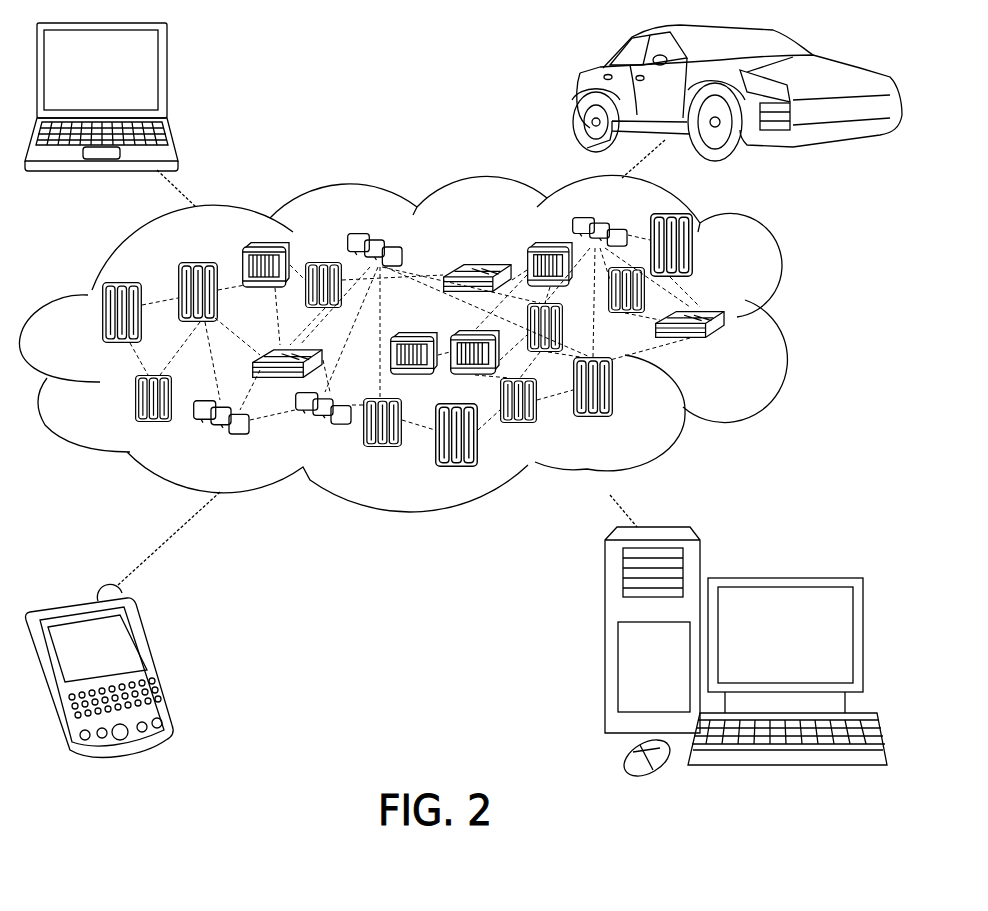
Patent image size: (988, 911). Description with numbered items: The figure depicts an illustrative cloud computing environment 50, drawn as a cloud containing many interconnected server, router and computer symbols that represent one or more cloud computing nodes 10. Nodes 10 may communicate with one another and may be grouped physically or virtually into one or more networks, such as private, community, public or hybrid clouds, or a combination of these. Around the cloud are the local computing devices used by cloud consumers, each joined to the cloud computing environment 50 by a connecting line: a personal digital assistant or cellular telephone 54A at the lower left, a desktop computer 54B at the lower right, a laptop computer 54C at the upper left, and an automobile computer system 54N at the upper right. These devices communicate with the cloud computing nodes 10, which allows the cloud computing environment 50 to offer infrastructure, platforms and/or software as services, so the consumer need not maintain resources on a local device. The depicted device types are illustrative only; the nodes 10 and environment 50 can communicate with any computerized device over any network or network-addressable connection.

The cloud computing node 10 is at (728, 348).
The cloud computing environment 50 is at (789, 323).
The personal digital assistant (PDA) or cellular telephone 54A is at (163, 669).
The desktop computer 54B is at (783, 578).
The laptop computer 54C is at (168, 78).
The automobile computer system 54N is at (575, 92).